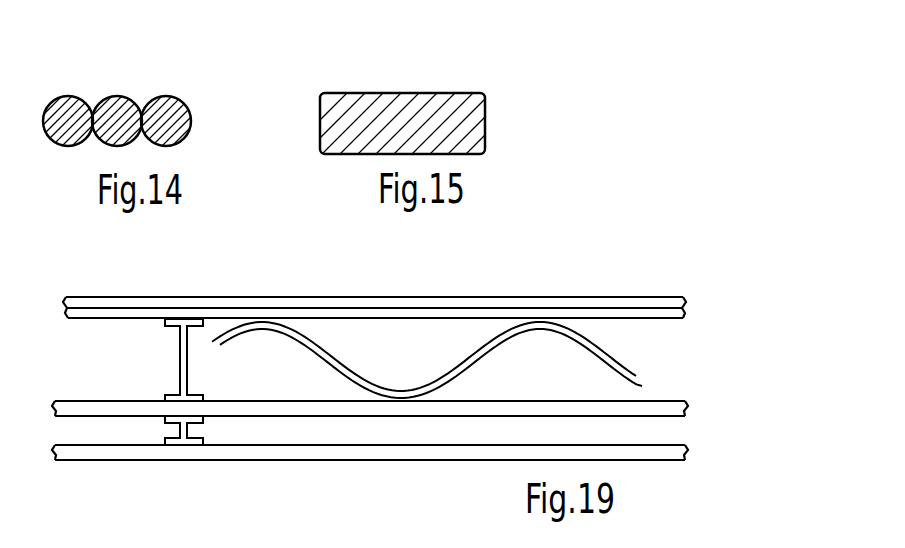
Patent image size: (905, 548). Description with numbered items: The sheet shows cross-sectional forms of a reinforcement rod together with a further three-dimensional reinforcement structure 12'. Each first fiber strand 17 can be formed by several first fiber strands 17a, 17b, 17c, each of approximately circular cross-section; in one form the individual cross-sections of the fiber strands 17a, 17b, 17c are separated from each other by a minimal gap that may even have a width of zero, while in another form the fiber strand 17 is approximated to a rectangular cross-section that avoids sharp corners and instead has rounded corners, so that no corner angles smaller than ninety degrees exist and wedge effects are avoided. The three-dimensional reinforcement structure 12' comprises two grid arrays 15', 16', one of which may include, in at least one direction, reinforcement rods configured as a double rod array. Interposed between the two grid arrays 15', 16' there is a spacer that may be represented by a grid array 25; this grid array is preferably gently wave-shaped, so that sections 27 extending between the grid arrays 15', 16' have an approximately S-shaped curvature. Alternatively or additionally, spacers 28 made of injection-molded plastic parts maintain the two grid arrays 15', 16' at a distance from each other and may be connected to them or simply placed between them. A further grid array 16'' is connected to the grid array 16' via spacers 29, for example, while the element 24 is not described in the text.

In FIG. 14, the first fiber strand 17 is at (136, 76).
In FIG. 15, the first fiber strand 17 is at (492, 80).
In FIG. 14, the first fiber strand 17a is at (55, 113).
In FIG. 14, the first fiber strand 17b is at (115, 110).
In FIG. 14, the first fiber strand 17c is at (158, 76).
In FIG. 19, the three-dimensional reinforcement structure 12' is at (412, 348).
In FIG. 19, the grid array 15' is at (416, 267).
In FIG. 19, the grid array 16' is at (412, 394).
In FIG. 19, the further grid array 16'' is at (370, 441).
In FIG. 19, the corrugated core sheet 24 is at (481, 358).
In FIG. 19, the grid array 25 is at (631, 351).
In FIG. 19, the sections 27 is at (488, 358).
In FIG. 19, the spacers 28 is at (180, 348).
In FIG. 19, the spacers 29 is at (168, 426).